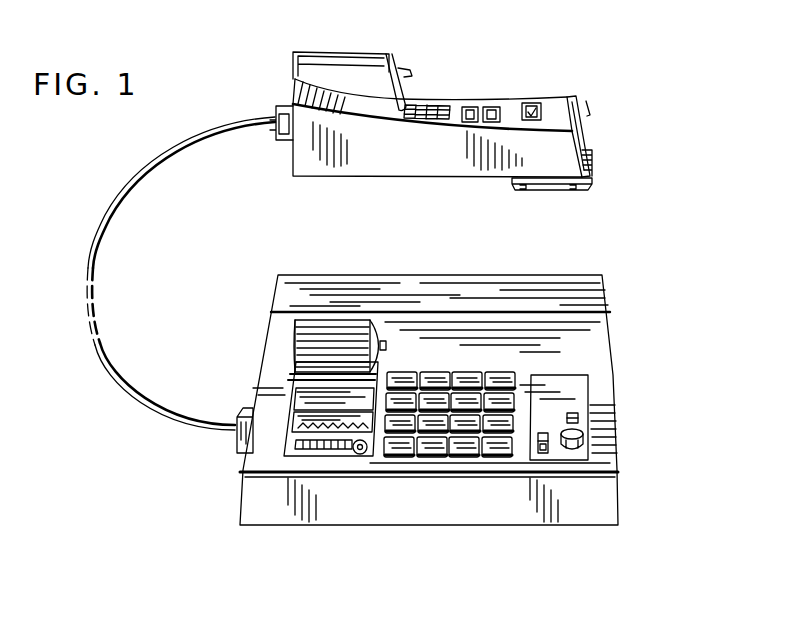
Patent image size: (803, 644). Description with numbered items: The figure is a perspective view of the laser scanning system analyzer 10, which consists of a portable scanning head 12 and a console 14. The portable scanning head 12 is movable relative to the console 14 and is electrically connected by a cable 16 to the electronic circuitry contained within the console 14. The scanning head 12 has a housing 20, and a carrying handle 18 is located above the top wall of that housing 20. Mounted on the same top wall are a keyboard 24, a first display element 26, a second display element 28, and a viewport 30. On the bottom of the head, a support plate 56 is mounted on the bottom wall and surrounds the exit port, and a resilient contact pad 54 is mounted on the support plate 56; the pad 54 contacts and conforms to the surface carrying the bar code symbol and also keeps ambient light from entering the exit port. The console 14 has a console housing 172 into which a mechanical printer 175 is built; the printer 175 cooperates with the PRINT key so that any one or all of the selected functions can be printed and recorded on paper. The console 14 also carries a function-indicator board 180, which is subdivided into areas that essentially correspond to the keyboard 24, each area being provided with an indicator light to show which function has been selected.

The laser scanning system analyzer 10 is at (611, 34).
The portable scanning head 12 is at (496, 95).
The console 14 is at (616, 378).
The cable 16 is at (138, 178).
The carrying handle 18 is at (370, 52).
The housing 20 is at (586, 129).
The keyboard 24 is at (430, 104).
The first display element 26 is at (500, 106).
The second display element 28 is at (467, 106).
The viewport 30 is at (535, 101).
The resilient contact pad 54 is at (586, 190).
The support plate 56 is at (587, 162).
The console housing 172 is at (617, 462).
The mechanical printer 175 is at (313, 348).
The function-indicator board 180 is at (503, 453).